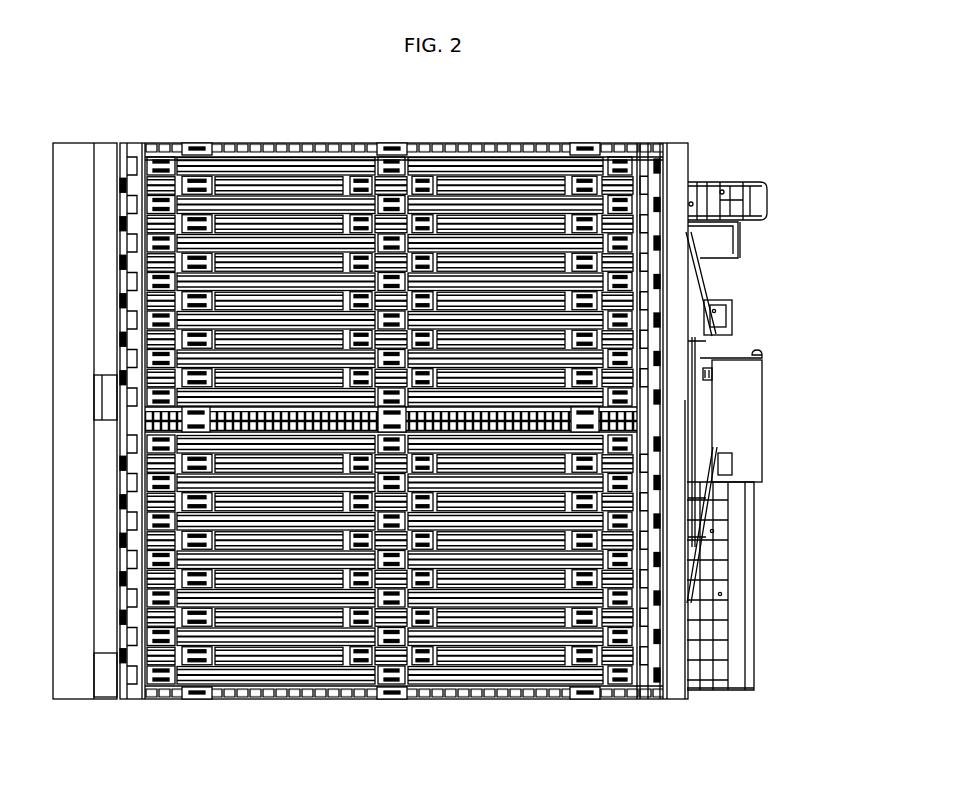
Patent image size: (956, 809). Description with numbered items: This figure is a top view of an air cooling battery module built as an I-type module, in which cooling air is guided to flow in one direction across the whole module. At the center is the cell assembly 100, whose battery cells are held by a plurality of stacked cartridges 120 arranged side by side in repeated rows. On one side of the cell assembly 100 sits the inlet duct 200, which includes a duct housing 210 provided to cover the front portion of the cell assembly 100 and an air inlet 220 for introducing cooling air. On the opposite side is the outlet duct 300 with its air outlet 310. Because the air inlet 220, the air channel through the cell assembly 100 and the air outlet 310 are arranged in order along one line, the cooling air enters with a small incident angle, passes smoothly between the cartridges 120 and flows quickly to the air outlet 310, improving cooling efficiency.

The cell assembly 100 is at (404, 416).
The cartridges 120 is at (531, 672).
The inlet duct 200 is at (755, 396).
The duct housing 210 is at (698, 514).
The air inlet 220 is at (752, 418).
The outlet duct 300 is at (86, 416).
The air outlet 310 is at (72, 683).